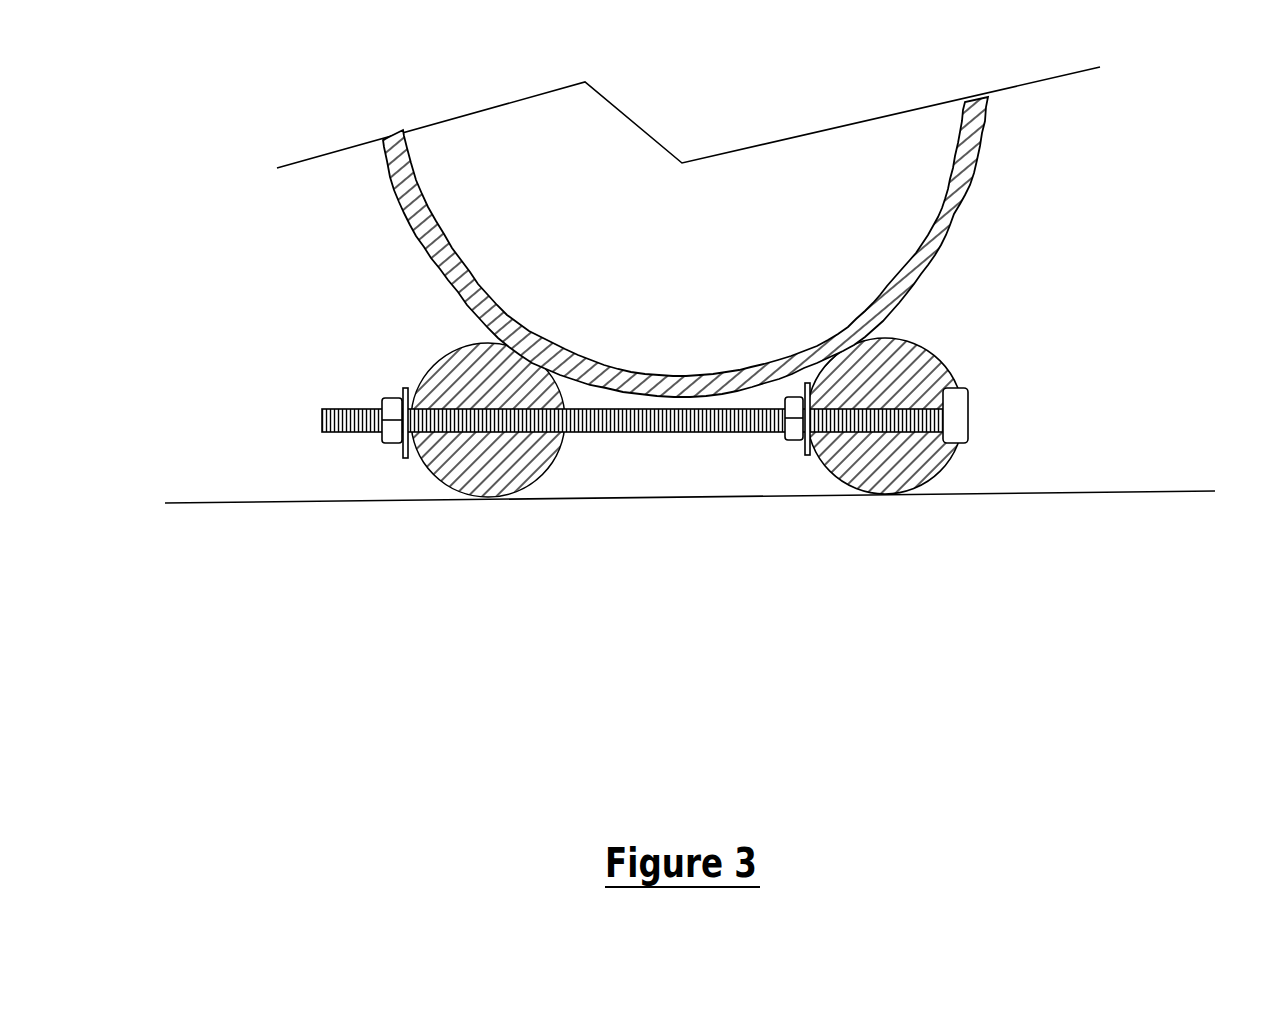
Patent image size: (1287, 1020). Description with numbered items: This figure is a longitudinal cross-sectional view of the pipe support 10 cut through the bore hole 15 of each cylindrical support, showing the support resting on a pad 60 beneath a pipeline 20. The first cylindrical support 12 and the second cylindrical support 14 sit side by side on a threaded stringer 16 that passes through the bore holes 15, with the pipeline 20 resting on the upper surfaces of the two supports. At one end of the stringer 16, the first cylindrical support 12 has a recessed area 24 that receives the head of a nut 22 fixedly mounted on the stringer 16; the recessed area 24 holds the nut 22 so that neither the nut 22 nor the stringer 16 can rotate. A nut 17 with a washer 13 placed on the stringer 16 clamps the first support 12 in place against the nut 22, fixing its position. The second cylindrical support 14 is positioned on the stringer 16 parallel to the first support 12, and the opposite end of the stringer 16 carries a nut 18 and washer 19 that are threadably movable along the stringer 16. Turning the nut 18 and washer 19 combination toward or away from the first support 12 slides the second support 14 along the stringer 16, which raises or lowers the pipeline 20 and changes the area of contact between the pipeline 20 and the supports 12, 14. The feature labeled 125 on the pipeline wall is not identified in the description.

The pipe support 10 is at (682, 524).
The first cylindrical support 12 is at (989, 393).
The washer 13 is at (889, 501).
The second cylindrical support 14 is at (381, 401).
The bore hole 15 is at (715, 457).
The stringer 16 is at (632, 524).
The nut 17 is at (857, 530).
The nut 18 is at (271, 492).
The washer 19 is at (310, 518).
The pipeline 20 is at (747, 232).
The nut 22 is at (1084, 394).
The recessed area 24 is at (1084, 446).
The pad 60 is at (715, 468).
The pipe wall 125 is at (800, 247).